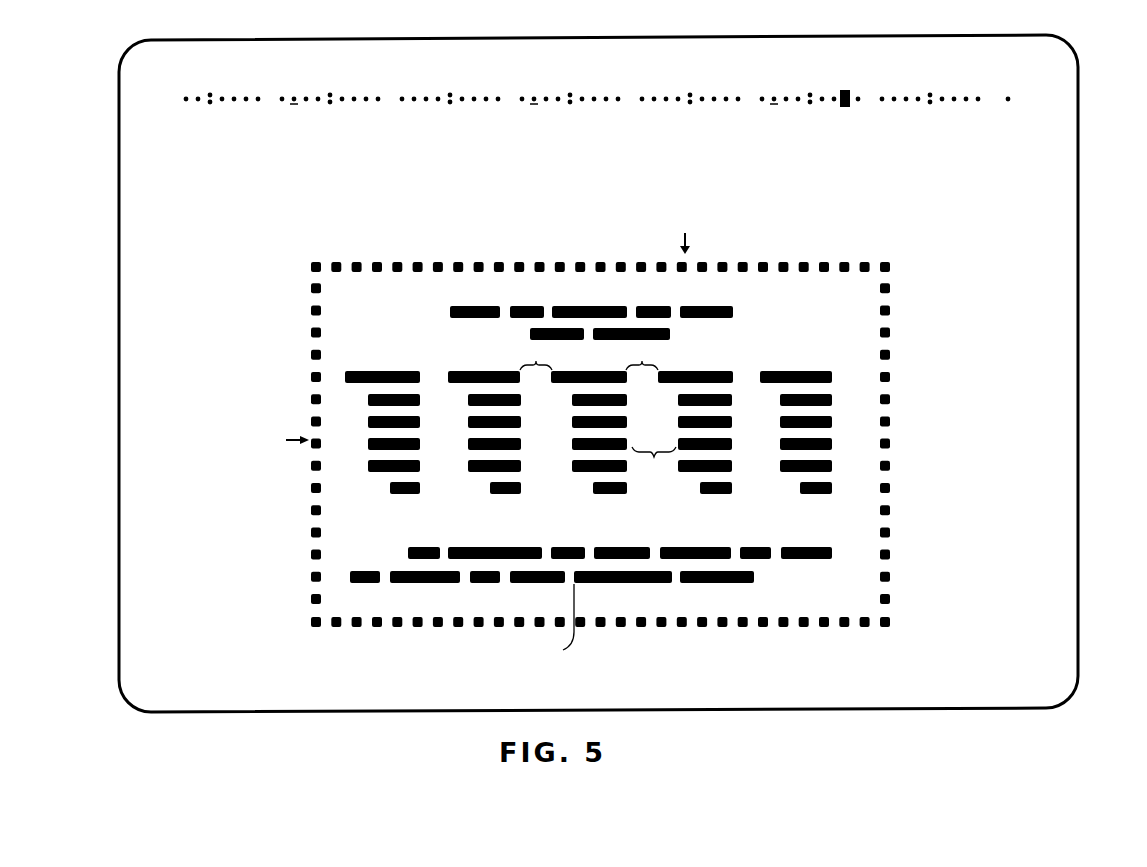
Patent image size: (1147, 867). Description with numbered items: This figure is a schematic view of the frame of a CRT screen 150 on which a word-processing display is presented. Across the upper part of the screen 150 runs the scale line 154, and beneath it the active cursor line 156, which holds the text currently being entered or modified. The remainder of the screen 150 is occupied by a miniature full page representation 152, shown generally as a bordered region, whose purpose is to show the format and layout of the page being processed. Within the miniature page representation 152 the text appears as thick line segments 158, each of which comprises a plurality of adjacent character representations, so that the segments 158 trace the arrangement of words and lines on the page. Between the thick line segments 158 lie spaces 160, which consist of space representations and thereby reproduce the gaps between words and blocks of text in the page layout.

The CRT screen 150 is at (1078, 316).
The miniature full page representation 152 is at (890, 288).
The scale line 154 is at (1020, 88).
The active cursor line 156 is at (950, 128).
The thick line segments 158 is at (832, 466).
The spaces 160 is at (598, 502).